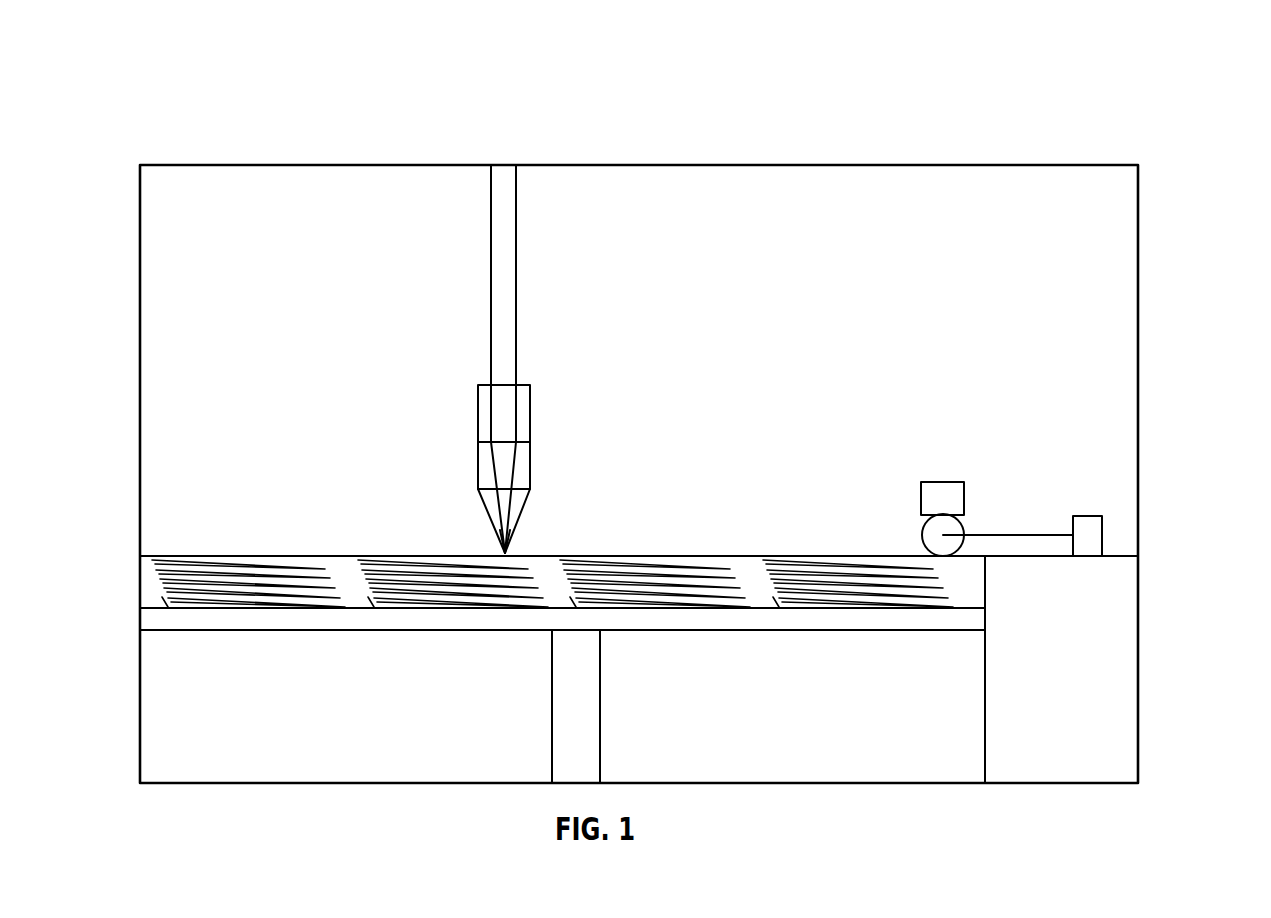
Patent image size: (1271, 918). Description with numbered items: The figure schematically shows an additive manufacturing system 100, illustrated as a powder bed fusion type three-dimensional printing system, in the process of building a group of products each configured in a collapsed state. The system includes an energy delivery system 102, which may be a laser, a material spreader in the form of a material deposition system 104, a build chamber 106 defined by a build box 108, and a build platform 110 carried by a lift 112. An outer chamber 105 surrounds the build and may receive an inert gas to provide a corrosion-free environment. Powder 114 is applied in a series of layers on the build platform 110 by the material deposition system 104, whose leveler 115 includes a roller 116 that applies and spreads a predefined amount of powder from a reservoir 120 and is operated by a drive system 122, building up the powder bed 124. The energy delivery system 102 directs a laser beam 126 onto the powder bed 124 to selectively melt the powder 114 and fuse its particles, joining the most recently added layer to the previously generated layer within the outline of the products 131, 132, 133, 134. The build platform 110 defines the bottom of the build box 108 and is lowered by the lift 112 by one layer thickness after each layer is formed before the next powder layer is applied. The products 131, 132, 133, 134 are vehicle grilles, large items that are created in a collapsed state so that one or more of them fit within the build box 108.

The additive manufacturing system 100 is at (1066, 89).
The energy delivery system 102 is at (542, 369).
The material deposition system 104 is at (1017, 469).
The outer chamber 105 is at (1140, 260).
The build chamber 106 is at (360, 605).
The build box 108 is at (987, 697).
The build platform 110 is at (987, 613).
The lift 112 is at (603, 697).
The powder 114 is at (150, 590).
The leveler 115 is at (941, 480).
The roller 116 is at (962, 528).
The reservoir 120 is at (921, 498).
The drive system 122 is at (1103, 532).
The powder bed 124 is at (340, 554).
The laser beam 126 is at (508, 531).
The product 131 is at (255, 580).
The product 132 is at (455, 580).
The product 133 is at (648, 580).
The product 134 is at (848, 556).